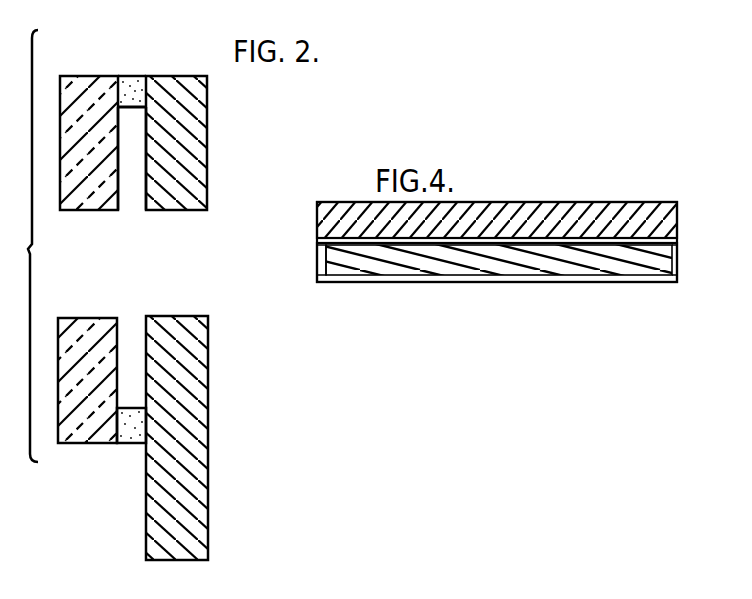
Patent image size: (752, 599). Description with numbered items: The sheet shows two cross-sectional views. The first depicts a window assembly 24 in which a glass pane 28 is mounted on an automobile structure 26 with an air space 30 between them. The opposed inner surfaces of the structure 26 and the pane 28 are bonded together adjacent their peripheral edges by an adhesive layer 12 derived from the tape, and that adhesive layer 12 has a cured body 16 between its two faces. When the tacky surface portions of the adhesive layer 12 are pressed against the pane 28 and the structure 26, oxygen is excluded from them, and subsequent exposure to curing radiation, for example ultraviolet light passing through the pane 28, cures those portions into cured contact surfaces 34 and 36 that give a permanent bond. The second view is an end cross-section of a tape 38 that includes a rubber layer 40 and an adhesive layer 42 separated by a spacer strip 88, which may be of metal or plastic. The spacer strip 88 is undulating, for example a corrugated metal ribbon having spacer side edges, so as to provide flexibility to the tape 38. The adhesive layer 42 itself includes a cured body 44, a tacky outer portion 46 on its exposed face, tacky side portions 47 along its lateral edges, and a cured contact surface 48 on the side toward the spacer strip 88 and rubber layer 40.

In FIG. 2, the adhesive layer 12 is at (143, 65).
In FIG. 2, the cured body 16 is at (128, 96).
In FIG. 2, the window assembly 24 is at (218, 156).
In FIG. 2, the automobile structure 26 is at (206, 100).
In FIG. 2, the glass pane 28 is at (62, 100).
In FIG. 2, the air space 30 is at (132, 190).
In FIG. 2, the cured contact surface 34 is at (145, 76).
In FIG. 2, the cured contact surface 36 is at (120, 73).
In FIG. 4, the tape 38 is at (689, 232).
In FIG. 4, the rubber layer 40 is at (604, 214).
In FIG. 4, the adhesive layer 42 is at (692, 275).
In FIG. 4, the cured body 44 is at (325, 266).
In FIG. 4, the tacky outer portion 46 is at (365, 282).
In FIG. 4, the tacky side portions 47 is at (318, 278).
In FIG. 4, the cured contact surface 48 is at (318, 248).
In FIG. 4, the spacer strip 88 is at (600, 245).